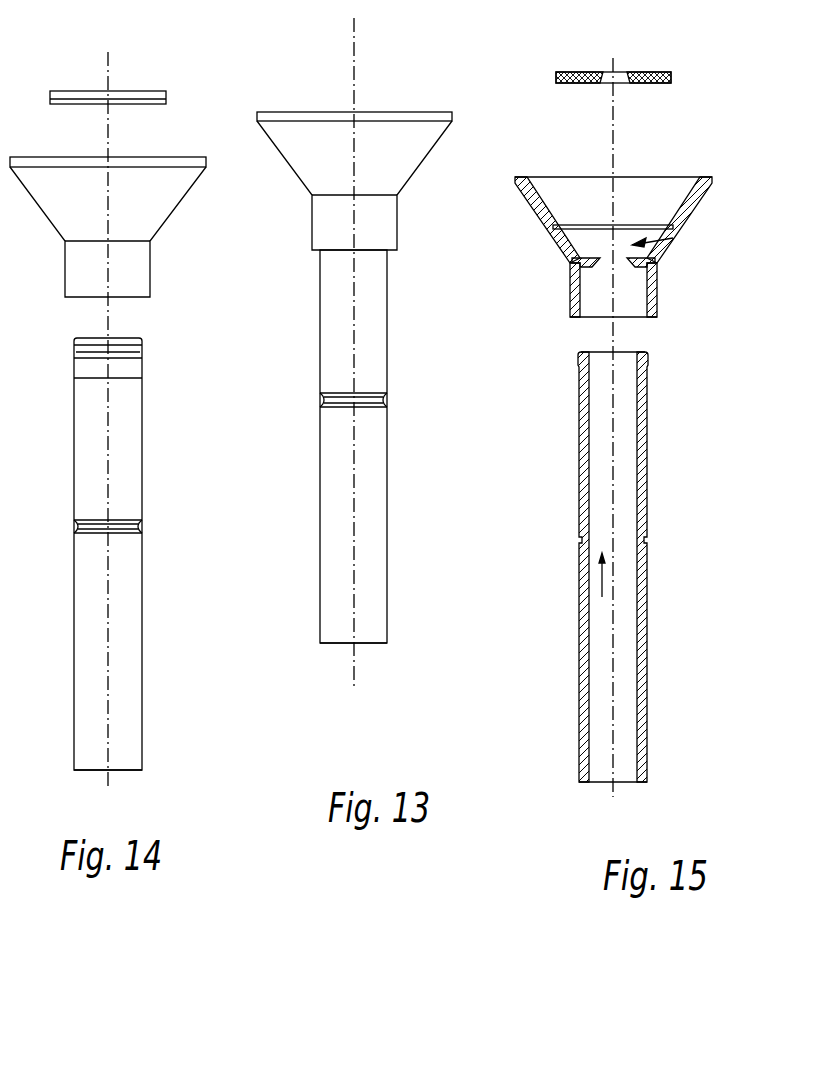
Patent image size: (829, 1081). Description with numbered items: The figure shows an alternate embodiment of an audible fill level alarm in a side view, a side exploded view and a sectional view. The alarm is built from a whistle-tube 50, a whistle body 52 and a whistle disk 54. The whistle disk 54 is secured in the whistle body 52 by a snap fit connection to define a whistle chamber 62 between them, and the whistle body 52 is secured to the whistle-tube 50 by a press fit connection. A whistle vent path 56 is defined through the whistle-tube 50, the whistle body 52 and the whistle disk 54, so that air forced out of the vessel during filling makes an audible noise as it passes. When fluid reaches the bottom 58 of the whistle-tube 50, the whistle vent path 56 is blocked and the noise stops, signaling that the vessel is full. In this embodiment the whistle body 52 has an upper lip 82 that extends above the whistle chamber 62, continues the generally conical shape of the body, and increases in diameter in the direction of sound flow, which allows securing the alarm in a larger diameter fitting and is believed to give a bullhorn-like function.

In FIG. 14, the whistle-tube 50 is at (142, 630).
In FIG. 13, the whistle-tube 50 is at (320, 455).
In FIG. 15, the whistle-tube 50 is at (647, 455).
In FIG. 14, the whistle body 52 is at (37, 205).
In FIG. 13, the whistle body 52 is at (287, 163).
In FIG. 15, the whistle body 52 is at (633, 247).
In FIG. 14, the whistle disk 54 is at (145, 90).
In FIG. 15, the whistle disk 54 is at (647, 72).
In FIG. 15, the whistle vent path 56 is at (597, 578).
In FIG. 14, the bottom 58 is at (130, 770).
In FIG. 13, the bottom 58 is at (373, 643).
In FIG. 15, the bottom 58 is at (623, 782).
In FIG. 15, the whistle chamber 62 is at (677, 238).
In FIG. 15, the upper lip 82 is at (530, 210).